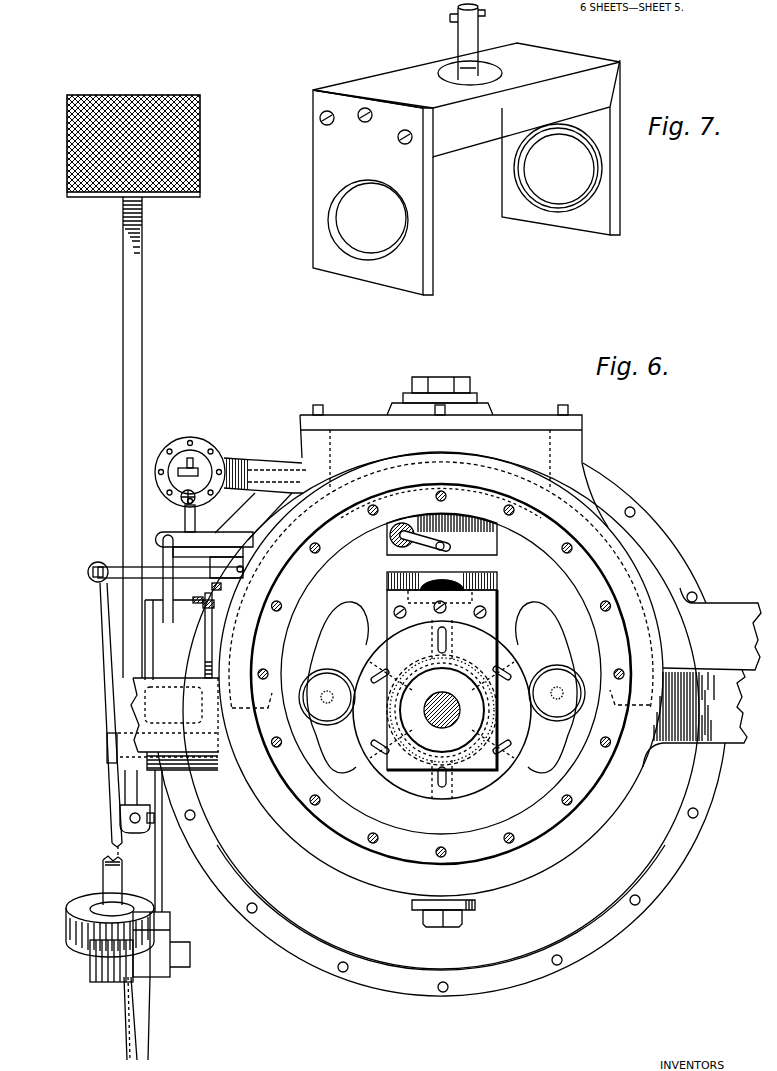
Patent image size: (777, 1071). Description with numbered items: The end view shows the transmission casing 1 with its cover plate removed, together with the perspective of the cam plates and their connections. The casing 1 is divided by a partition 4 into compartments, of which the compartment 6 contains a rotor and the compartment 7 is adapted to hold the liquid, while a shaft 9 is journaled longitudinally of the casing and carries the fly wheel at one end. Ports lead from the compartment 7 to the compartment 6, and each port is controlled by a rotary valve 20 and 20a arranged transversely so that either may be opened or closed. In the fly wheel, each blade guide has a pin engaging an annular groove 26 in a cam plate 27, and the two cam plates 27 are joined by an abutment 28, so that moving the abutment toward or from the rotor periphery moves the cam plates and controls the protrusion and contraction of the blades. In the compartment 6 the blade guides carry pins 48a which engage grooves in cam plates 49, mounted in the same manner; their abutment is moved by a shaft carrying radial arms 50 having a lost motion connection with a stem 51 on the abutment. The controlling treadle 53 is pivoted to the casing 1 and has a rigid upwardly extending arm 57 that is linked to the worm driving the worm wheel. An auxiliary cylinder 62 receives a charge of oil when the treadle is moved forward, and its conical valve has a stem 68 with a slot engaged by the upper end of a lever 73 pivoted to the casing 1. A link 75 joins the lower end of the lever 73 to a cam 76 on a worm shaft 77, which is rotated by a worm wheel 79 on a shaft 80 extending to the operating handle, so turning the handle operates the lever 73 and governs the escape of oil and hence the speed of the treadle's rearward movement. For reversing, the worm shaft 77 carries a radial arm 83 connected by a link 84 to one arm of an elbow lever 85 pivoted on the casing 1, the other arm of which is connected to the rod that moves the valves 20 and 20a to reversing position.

In FIG. 6, the casing 1 is at (590, 927).
In FIG. 6, the partition 4 is at (500, 412).
In FIG. 6, the compartment 6 is at (447, 930).
In FIG. 6, the compartment 7 is at (580, 865).
In FIG. 6, the shaft 9 is at (448, 722).
In FIG. 6, the rotary valve 20 is at (328, 680).
In FIG. 6, the rotary valve 20a is at (553, 670).
In FIG. 7, the annular groove 26 is at (533, 213).
In FIG. 7, the cam plate 27 is at (363, 276).
In FIG. 7, the abutment 28 is at (360, 82).
In FIG. 6, the pin 48a is at (463, 592).
In FIG. 6, the cam plate 49 is at (403, 513).
In FIG. 6, the radial arm 50 is at (425, 533).
In FIG. 6, the stem 51 is at (450, 537).
In FIG. 6, the treadle 53 is at (125, 282).
In FIG. 6, the arm 57 is at (205, 664).
In FIG. 6, the auxiliary cylinder 62 is at (428, 377).
In FIG. 6, the valve stem 68 is at (198, 468).
In FIG. 6, the lever 73 is at (195, 519).
In FIG. 6, the link 75 is at (162, 893).
In FIG. 6, the cam 76 is at (168, 925).
In FIG. 6, the worm shaft 77 is at (93, 966).
In FIG. 6, the worm wheel 79 is at (70, 906).
In FIG. 6, the shaft 80 is at (102, 868).
In FIG. 6, the radial arm 83 is at (150, 1023).
In FIG. 6, the link 84 is at (92, 597).
In FIG. 6, the elbow lever 85 is at (118, 563).